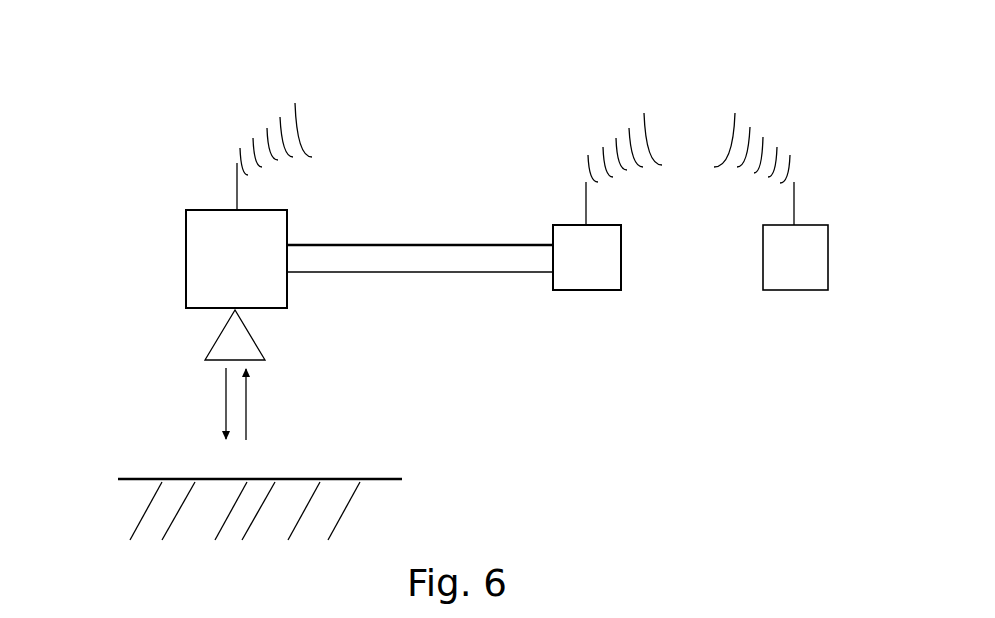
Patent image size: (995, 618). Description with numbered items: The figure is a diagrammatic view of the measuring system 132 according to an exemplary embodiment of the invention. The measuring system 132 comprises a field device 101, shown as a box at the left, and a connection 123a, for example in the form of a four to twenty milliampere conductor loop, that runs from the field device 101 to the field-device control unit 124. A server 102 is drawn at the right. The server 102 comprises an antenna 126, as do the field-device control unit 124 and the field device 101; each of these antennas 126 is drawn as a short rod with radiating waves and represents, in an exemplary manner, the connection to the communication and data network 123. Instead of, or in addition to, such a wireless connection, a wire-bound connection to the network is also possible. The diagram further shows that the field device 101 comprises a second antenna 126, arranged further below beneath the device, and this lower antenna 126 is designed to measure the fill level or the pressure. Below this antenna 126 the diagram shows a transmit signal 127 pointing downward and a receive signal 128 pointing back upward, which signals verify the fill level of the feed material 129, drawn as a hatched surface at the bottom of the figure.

The field device 101 is at (208, 196).
The server 102 is at (795, 295).
The communication and data network 123 is at (728, 114).
The connection 123a is at (440, 230).
The field-device control unit 124 is at (588, 294).
The antenna 126 is at (241, 190).
The transmit signal 127 is at (218, 415).
The receive signal 128 is at (255, 413).
The feed material 129 is at (388, 513).
The measuring system 132 is at (235, 105).